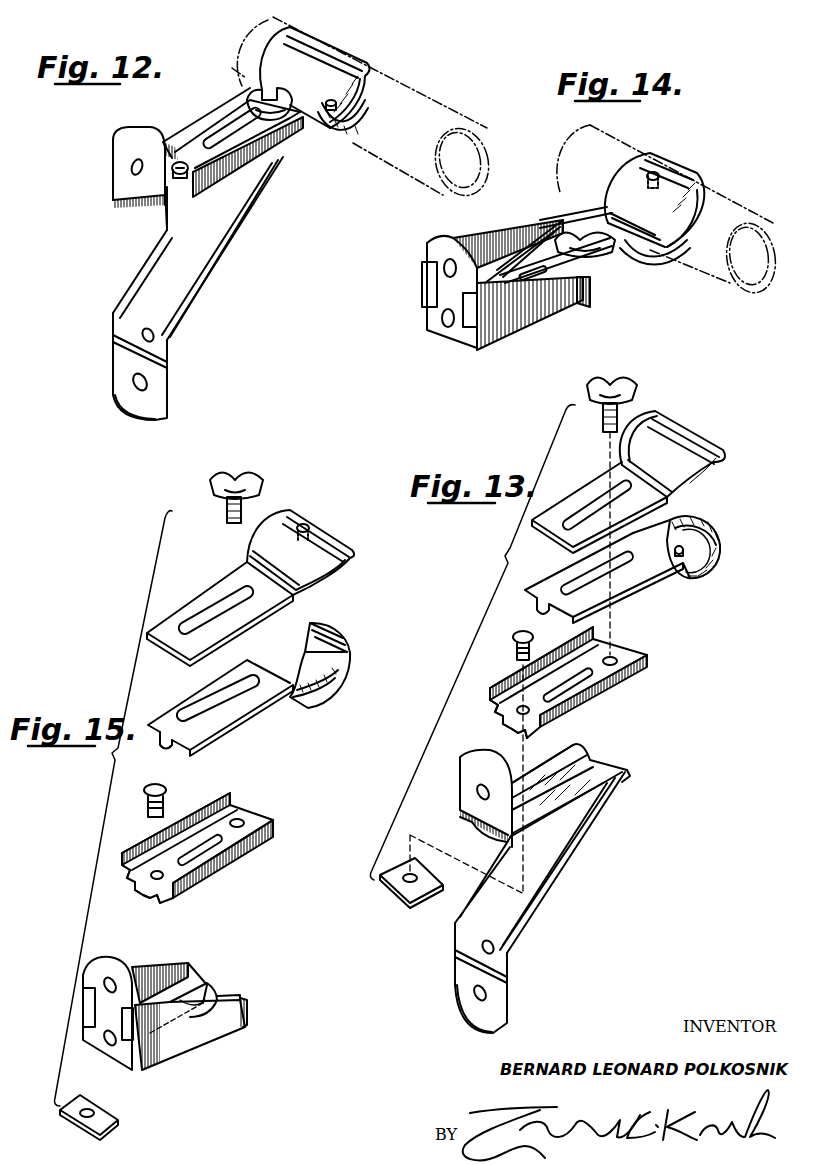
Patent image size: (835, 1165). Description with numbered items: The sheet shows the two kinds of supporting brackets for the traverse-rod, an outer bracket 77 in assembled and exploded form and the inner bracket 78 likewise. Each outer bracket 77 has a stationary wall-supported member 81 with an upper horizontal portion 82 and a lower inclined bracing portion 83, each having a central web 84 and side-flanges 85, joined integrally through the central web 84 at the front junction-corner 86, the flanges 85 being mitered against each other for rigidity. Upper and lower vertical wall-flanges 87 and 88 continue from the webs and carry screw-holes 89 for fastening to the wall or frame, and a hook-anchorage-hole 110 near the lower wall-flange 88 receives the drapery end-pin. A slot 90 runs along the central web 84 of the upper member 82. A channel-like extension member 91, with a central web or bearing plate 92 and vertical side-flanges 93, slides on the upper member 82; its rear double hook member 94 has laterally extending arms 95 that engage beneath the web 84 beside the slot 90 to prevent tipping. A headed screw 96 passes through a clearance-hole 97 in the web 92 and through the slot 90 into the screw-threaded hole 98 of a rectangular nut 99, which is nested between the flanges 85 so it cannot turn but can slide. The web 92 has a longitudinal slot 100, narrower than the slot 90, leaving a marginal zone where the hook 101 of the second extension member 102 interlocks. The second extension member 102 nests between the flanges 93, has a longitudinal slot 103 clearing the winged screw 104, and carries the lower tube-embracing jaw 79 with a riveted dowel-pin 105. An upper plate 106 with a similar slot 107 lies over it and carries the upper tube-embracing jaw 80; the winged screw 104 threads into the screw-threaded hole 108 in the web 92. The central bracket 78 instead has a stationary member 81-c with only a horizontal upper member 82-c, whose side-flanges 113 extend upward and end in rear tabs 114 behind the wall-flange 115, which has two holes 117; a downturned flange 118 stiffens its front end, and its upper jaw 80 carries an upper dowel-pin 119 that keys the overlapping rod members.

In FIG. 12, the outer bracket 77 is at (108, 249).
In FIG. 14, the inner bracket 78 is at (486, 236).
In FIG. 12, the lower tube-embracing jaw 79 is at (348, 133).
In FIG. 14, the lower tube-embracing jaw 79 is at (653, 252).
In FIG. 13, the lower tube-embracing jaw 79 is at (687, 577).
In FIG. 15, the lower tube-embracing jaw 79 is at (325, 703).
In FIG. 12, the upper tube-embracing jaw 80 is at (330, 53).
In FIG. 14, the upper tube-embracing jaw 80 is at (613, 183).
In FIG. 13, the upper tube-embracing jaw 80 is at (665, 418).
In FIG. 15, the upper tube-embracing jaw 80 is at (290, 517).
In FIG. 12, the stationary wall-supported member 81 is at (175, 297).
In FIG. 14, the stationary wall-supported member 81 is at (521, 285).
In FIG. 13, the stationary wall-supported member 81 is at (560, 898).
In FIG. 15, the stationary member 81-c is at (182, 1043).
In FIG. 13, the upper horizontal portion 82 is at (613, 767).
In FIG. 15, the horizontal upper member 82-c is at (200, 983).
In FIG. 13, the lower inclined bracing portion 83 is at (533, 943).
In FIG. 13, the central web 84 is at (543, 870).
In FIG. 15, the central web 84 is at (190, 980).
In FIG. 12, the side-flanges 85 is at (208, 287).
In FIG. 13, the side-flanges 85 is at (563, 818).
In FIG. 13, the front junction-corner 86 is at (628, 774).
In FIG. 12, the upper wall-flange 87 is at (113, 152).
In FIG. 13, the upper wall-flange 87 is at (463, 768).
In FIG. 12, the lower wall-flange 88 is at (130, 397).
In FIG. 13, the lower wall-flange 88 is at (497, 1022).
In FIG. 12, the screw-holes 89 is at (133, 380).
In FIG. 13, the screw-holes 89 is at (477, 793).
In FIG. 13, the slot 90 is at (583, 757).
In FIG. 12, the extension member 91 is at (287, 140).
In FIG. 13, the extension member 91 is at (630, 690).
In FIG. 15, the extension member 91 is at (270, 830).
In FIG. 13, the central horizontal web portion 92 is at (620, 660).
In FIG. 15, the central horizontal web portion 92 is at (233, 813).
In FIG. 13, the vertical side-flanges 93 is at (510, 680).
In FIG. 15, the vertical side-flanges 93 is at (157, 842).
In FIG. 13, the double hook member 94 is at (510, 740).
In FIG. 15, the double hook member 94 is at (143, 905).
In FIG. 13, the laterally extending arms 95 is at (497, 722).
In FIG. 15, the laterally extending arms 95 is at (127, 895).
In FIG. 12, the headed screw 96 is at (178, 156).
In FIG. 13, the headed screw 96 is at (513, 638).
In FIG. 15, the headed screw 96 is at (167, 787).
In FIG. 13, the clearance-hole 97 is at (497, 700).
In FIG. 15, the clearance-hole 97 is at (133, 880).
In FIG. 13, the screw-threaded hole 98 is at (415, 877).
In FIG. 15, the screw-threaded hole 98 is at (97, 1110).
In FIG. 13, the rectangular nut 99 is at (388, 900).
In FIG. 15, the rectangular nut 99 is at (73, 1113).
In FIG. 13, the longitudinal slot 100 is at (600, 650).
In FIG. 15, the longitudinal slot 100 is at (213, 837).
In FIG. 13, the hook 101 is at (540, 610).
In FIG. 15, the hook 101 is at (163, 750).
In FIG. 13, the second extension member 102 is at (553, 580).
In FIG. 15, the second extension member 102 is at (187, 702).
In FIG. 13, the longitudinal slot 103 is at (630, 553).
In FIG. 15, the longitudinal slot 103 is at (227, 700).
In FIG. 12, the winged screw 104 is at (243, 95).
In FIG. 13, the winged screw 104 is at (632, 378).
In FIG. 15, the winged screw 104 is at (210, 485).
In FIG. 13, the dowel-pin 105 is at (712, 558).
In FIG. 12, the upper plate 106 is at (237, 126).
In FIG. 14, the upper plate 106 is at (587, 227).
In FIG. 13, the upper plate 106 is at (600, 487).
In FIG. 15, the upper plate 106 is at (200, 607).
In FIG. 14, the slot 107 is at (590, 267).
In FIG. 13, the slot 107 is at (567, 517).
In FIG. 15, the slot 107 is at (220, 613).
In FIG. 13, the screw-threaded hole 108 is at (612, 657).
In FIG. 15, the screw-threaded hole 108 is at (240, 820).
In FIG. 12, the hook-anchorage-hole 110 is at (140, 333).
In FIG. 13, the hook-anchorage-hole 110 is at (457, 962).
In FIG. 15, the side-flanges 113 is at (150, 967).
In FIG. 14, the rear tabs 114 is at (427, 288).
In FIG. 15, the rear tabs 114 is at (128, 1027).
In FIG. 14, the wall-flange 115 is at (440, 253).
In FIG. 15, the wall-flange 115 is at (90, 968).
In FIG. 15, the holes 117 is at (105, 995).
In FIG. 15, the downturned flange 118 is at (247, 1020).
In FIG. 12, the upper dowel-pin 119 is at (331, 105).
In FIG. 14, the upper dowel-pin 119 is at (678, 155).
In FIG. 13, the upper dowel-pin 119 is at (679, 551).
In FIG. 15, the upper dowel-pin 119 is at (320, 537).